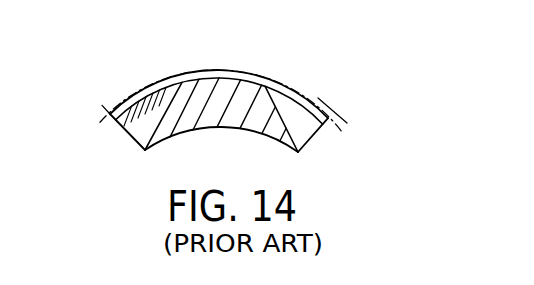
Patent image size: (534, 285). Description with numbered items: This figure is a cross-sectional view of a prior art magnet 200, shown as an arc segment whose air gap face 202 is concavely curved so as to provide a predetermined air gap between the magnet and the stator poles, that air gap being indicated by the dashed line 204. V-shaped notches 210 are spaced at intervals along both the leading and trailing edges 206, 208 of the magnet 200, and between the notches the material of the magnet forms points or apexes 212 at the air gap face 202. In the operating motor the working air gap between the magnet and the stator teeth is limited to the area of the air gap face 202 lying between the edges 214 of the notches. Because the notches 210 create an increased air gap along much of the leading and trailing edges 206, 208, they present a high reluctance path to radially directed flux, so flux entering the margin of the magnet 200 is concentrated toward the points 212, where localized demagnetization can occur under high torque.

The prior art magnet 200 is at (253, 69).
The air gap face 202 is at (196, 75).
The dashed line 204 is at (282, 83).
The leading edge 206 is at (120, 132).
The trailing edge 208 is at (320, 127).
The V-shaped notch 210 is at (130, 142).
The point or apex 212 is at (111, 123).
The notch edge 214 is at (150, 93).